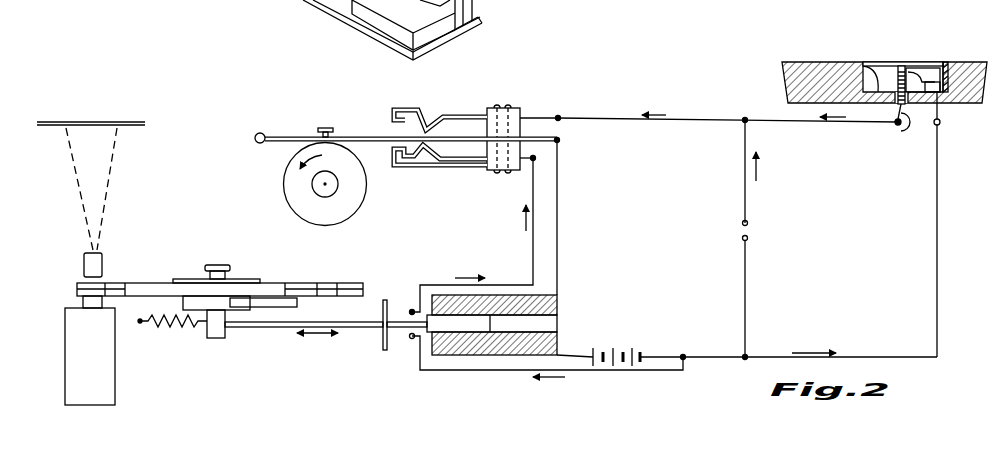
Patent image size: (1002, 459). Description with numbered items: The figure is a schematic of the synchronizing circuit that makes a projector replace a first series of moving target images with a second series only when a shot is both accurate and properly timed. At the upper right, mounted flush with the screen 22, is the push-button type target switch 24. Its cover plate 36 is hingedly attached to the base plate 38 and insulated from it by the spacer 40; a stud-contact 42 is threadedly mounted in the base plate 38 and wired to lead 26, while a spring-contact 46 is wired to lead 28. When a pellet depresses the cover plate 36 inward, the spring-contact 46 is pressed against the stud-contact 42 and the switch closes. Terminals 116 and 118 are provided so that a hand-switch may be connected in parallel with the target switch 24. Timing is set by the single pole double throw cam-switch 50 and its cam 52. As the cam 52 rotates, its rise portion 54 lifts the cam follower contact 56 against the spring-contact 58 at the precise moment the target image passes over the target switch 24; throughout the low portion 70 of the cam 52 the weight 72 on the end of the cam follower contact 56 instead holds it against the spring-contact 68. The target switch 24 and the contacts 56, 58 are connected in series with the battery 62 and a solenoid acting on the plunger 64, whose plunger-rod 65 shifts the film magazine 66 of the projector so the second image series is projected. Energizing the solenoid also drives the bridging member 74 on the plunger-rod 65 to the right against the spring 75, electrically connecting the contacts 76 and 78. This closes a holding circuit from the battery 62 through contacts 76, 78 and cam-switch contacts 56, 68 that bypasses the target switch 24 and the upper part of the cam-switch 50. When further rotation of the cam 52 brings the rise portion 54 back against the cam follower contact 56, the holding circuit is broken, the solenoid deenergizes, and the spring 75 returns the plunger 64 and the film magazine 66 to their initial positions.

The screen 22 is at (970, 67).
The target switch 24 is at (938, 62).
The lead 26 is at (853, 123).
The lead 28 is at (940, 119).
The cover plate 36 is at (897, 62).
The base plate 38 is at (867, 65).
The spacer 40 is at (947, 62).
The stud-contact 42 is at (900, 78).
The spring-contact 46 is at (912, 72).
The cam-switch 50 is at (468, 106).
The cam 52 is at (293, 193).
The rise portion 54 is at (367, 153).
The cam follower contact 56 is at (290, 138).
The spring-contact 58 is at (447, 113).
The battery 62 is at (620, 347).
The plunger 64 is at (452, 323).
The plunger-rod 65 is at (362, 327).
The film magazine 66 is at (145, 283).
The spring-contact 68 is at (462, 160).
The low portion 70 is at (320, 225).
The weight 72 is at (263, 134).
The bridging member 74 is at (386, 299).
The spring 75 is at (182, 327).
The contact 76 is at (412, 310).
The contact 78 is at (412, 338).
The terminal 116 is at (745, 223).
The terminal 118 is at (745, 238).